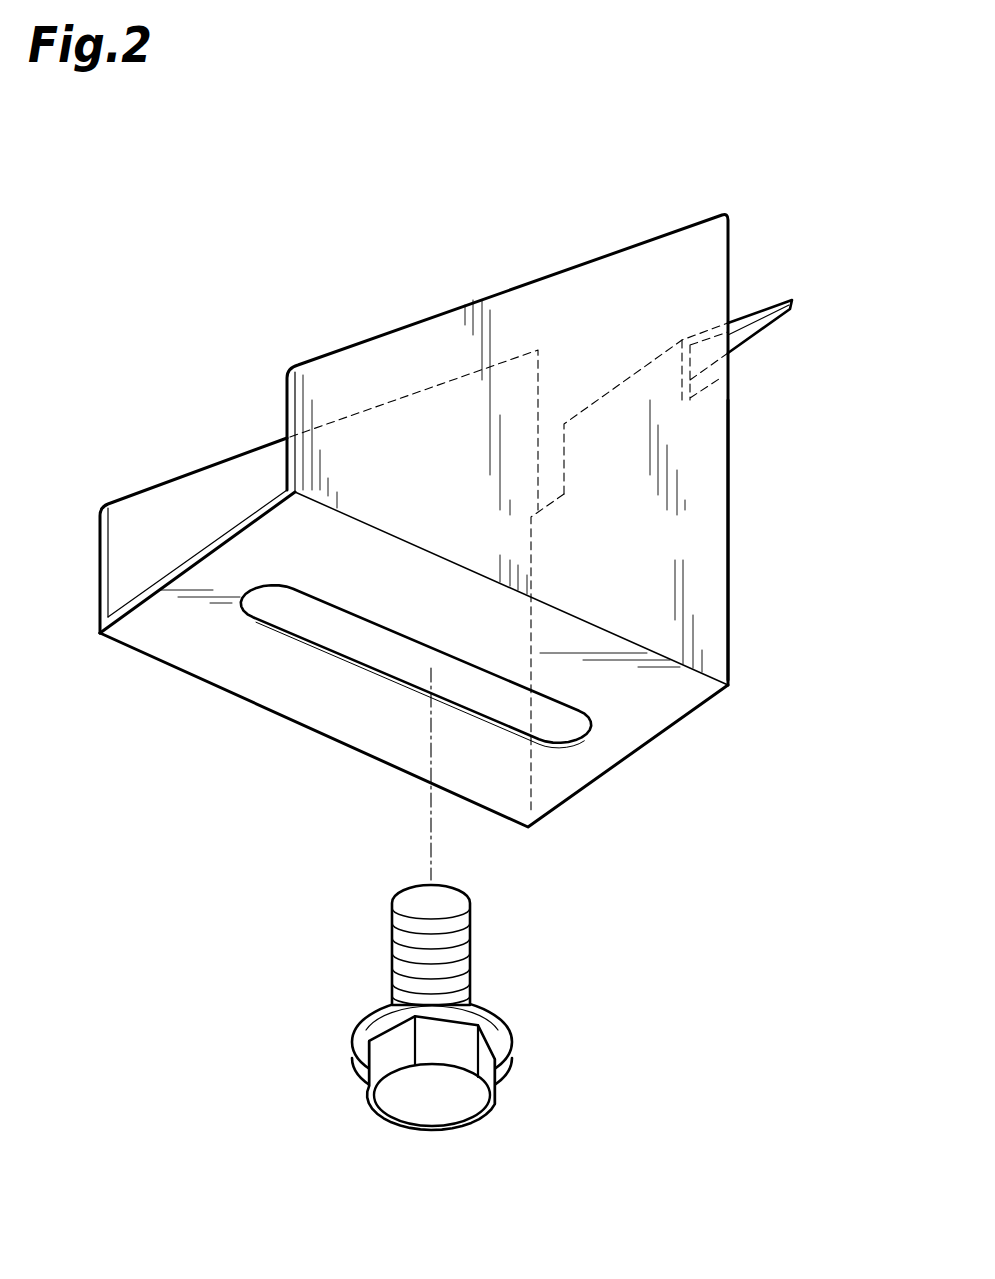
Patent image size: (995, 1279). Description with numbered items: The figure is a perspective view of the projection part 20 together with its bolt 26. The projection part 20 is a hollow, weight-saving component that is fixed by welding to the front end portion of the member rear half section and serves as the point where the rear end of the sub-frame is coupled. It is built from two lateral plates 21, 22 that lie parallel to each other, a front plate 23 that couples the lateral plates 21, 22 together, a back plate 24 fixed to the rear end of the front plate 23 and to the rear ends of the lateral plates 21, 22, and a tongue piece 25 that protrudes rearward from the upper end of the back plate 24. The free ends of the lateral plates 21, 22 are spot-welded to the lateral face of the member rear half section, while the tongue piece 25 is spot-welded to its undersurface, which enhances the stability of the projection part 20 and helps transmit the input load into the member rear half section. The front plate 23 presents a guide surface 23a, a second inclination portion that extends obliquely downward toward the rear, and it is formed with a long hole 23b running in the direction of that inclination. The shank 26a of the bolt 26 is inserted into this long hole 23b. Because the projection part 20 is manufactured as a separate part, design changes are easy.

The projection part 20 is at (304, 266).
The lateral plate 21 is at (578, 287).
The lateral plate 22 is at (212, 478).
The front plate 23 is at (182, 560).
The guide surface 23a is at (333, 702).
The long hole 23b is at (305, 622).
The back plate 24 is at (710, 542).
The tongue piece 25 is at (767, 328).
The bolt 26 is at (490, 1095).
The shank 26a is at (470, 942).